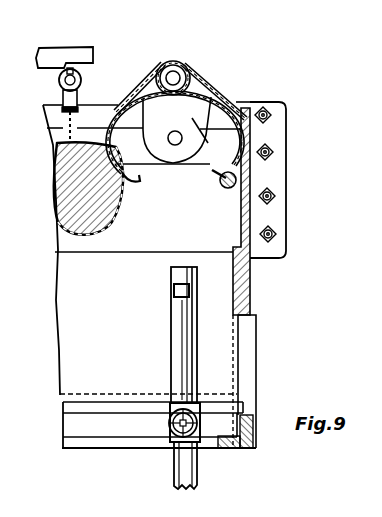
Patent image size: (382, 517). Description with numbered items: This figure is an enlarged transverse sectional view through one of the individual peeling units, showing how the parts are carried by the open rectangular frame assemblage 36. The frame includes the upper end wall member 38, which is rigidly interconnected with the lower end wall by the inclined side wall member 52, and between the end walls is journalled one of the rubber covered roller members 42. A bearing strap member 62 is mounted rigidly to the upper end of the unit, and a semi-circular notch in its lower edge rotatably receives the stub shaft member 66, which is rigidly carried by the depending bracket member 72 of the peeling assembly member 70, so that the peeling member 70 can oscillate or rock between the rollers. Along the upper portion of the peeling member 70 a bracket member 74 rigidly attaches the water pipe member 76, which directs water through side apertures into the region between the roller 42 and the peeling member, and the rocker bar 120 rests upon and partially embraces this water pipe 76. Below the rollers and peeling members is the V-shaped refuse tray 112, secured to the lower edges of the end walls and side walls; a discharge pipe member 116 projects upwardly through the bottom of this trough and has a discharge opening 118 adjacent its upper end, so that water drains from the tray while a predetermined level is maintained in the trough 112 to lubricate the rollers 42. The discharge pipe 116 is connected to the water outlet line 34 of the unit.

The water outlet line 34 is at (200, 478).
The open rectangular frame assemblage 36 is at (255, 413).
The upper end wall member 38 is at (132, 244).
The roller member 42 is at (118, 214).
The inclined side wall member 52 is at (248, 285).
The bearing strap member 62 is at (97, 120).
The stub shaft member 66 is at (173, 143).
The peeling assembly member 70 is at (237, 118).
The depending bracket member 72 is at (185, 130).
The bracket member 74 is at (205, 82).
The water pipe member 76 is at (181, 68).
The refuse tray 112 is at (240, 344).
The discharge pipe member 116 is at (182, 320).
The discharge opening 118 is at (173, 292).
The rocker bar 120 is at (63, 54).